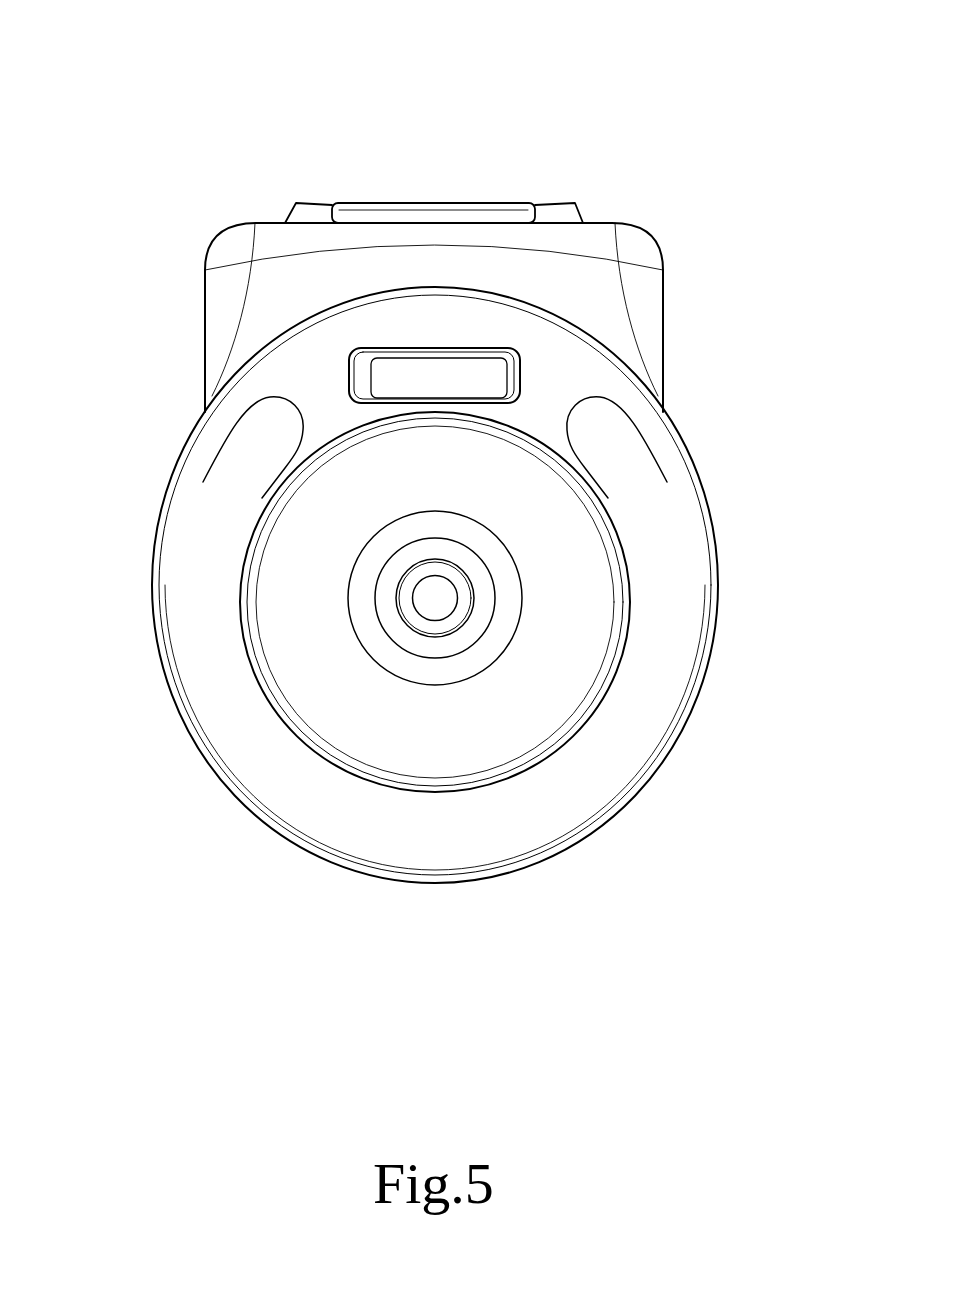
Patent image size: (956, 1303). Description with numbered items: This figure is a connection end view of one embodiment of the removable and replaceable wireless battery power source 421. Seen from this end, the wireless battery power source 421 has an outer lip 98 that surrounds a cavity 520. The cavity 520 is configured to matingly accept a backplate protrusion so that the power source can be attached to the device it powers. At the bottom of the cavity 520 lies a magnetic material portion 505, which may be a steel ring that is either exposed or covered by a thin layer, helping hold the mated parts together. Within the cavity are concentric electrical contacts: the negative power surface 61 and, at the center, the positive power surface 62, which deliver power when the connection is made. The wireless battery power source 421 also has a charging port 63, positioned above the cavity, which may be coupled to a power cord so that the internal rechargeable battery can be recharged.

The wireless battery power source 421 is at (170, 165).
The lip 98 is at (668, 618).
The cavity 520 is at (270, 562).
The magnetic material portion 505 is at (352, 719).
The negative power surface 61 is at (475, 567).
The positive power surface 62 is at (438, 603).
The charging port 63 is at (520, 365).